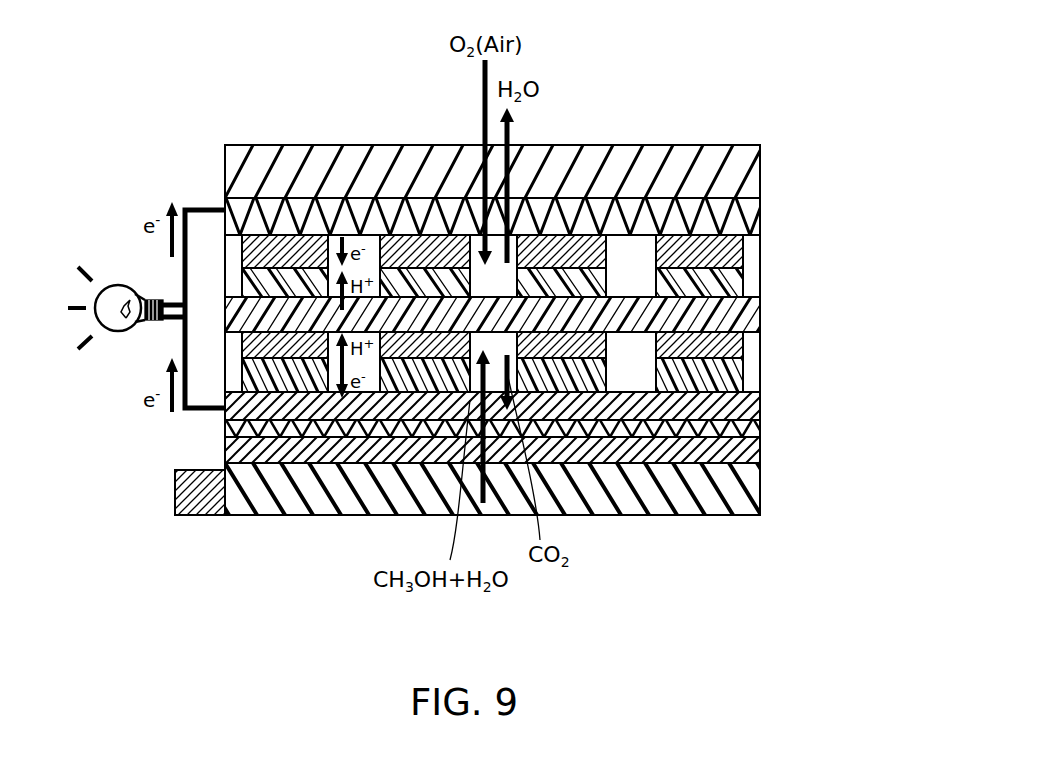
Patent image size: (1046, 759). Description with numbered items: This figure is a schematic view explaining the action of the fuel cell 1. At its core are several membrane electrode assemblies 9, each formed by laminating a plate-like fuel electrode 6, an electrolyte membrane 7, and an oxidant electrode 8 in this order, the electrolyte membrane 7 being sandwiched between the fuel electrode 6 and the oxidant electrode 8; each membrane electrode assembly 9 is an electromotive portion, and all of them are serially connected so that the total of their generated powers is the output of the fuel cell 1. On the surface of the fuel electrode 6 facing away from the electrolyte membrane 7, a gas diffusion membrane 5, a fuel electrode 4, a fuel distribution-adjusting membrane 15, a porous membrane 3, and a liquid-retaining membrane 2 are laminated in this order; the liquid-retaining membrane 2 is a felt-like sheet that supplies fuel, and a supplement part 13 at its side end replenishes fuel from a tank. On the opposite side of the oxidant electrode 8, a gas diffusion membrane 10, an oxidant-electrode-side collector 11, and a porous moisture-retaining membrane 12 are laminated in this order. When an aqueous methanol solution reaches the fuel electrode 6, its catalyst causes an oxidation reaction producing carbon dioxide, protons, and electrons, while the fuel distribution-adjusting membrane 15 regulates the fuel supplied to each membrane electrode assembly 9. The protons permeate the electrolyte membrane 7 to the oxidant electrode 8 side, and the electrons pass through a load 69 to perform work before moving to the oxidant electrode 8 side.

The fuel cell 1 is at (746, 77).
The liquid-retaining membrane 2 is at (745, 490).
The porous membrane 3 is at (745, 455).
The fuel electrode 4 is at (745, 405).
The gas diffusion membrane 5 is at (745, 372).
The fuel electrode 6 is at (530, 344).
The electrolyte membrane 7 is at (745, 318).
The oxidant electrode 8 is at (745, 283).
The membrane electrode assembly 9 is at (524, 214).
The gas diffusion membrane 10 is at (745, 253).
The oxidant-electrode-side collector 11 is at (745, 220).
The porous moisture-retaining membrane 12 is at (745, 178).
The supplement part 13 is at (198, 505).
The fuel distribution-adjusting membrane 15 is at (745, 430).
The load 69 is at (113, 330).